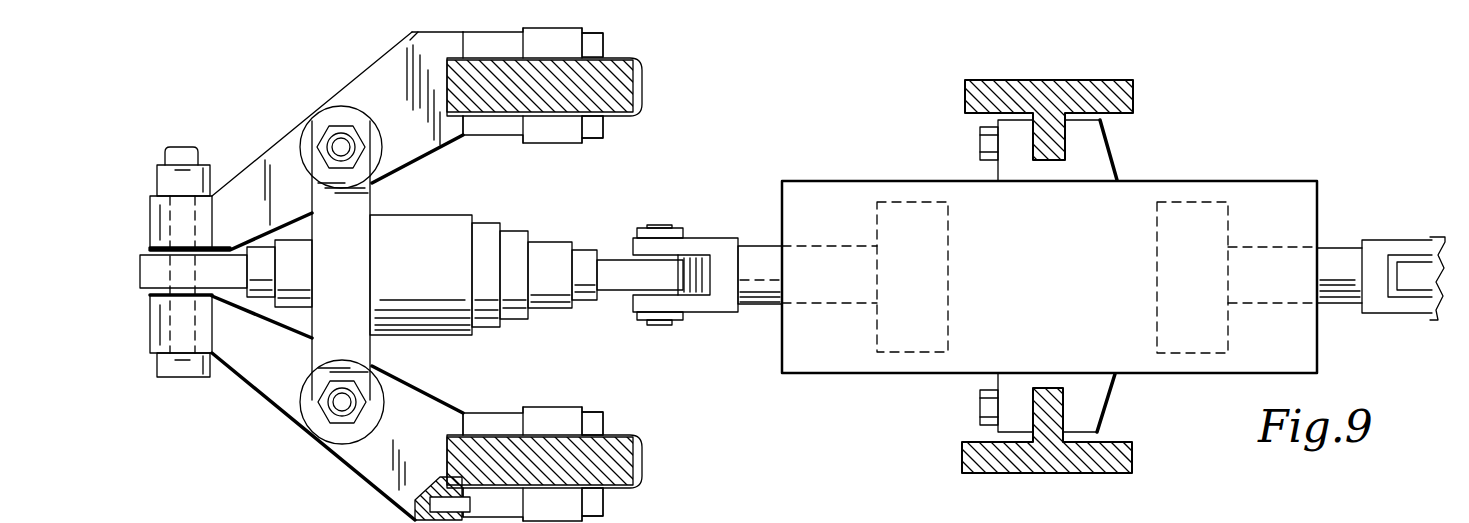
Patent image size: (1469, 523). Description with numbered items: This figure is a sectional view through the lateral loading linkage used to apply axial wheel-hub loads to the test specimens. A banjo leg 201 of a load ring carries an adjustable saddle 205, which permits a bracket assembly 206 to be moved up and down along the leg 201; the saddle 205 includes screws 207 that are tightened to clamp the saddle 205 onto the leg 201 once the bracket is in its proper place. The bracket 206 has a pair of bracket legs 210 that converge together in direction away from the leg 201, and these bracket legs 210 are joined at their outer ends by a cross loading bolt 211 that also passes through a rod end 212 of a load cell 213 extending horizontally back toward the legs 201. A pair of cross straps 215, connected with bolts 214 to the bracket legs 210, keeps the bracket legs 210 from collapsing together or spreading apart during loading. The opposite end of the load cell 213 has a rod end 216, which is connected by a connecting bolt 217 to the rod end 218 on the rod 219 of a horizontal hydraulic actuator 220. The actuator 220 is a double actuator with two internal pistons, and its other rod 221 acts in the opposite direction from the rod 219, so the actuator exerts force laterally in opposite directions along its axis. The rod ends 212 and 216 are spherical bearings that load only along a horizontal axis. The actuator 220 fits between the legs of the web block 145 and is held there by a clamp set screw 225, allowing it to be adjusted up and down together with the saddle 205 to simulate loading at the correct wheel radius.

The web block 145 is at (1043, 82).
The banjo legs 201 is at (633, 68).
The adjustable saddle 205 is at (568, 143).
The bracket assembly 206 is at (268, 400).
The screws 207 is at (603, 36).
The bracket legs 210 is at (283, 147).
The cross loading bolt 211 is at (182, 374).
The rod end 212 is at (218, 267).
The load cell 213 is at (445, 218).
The bolts 214 is at (341, 147).
The cross straps 215 is at (368, 353).
The rod end 216 is at (613, 260).
The connecting bolt 217 is at (663, 323).
The rod end 218 is at (708, 240).
The rod 219 is at (763, 304).
The horizontal hydraulic actuator 220 is at (885, 357).
The rod 221 is at (1332, 252).
The clamp set screw 225 is at (980, 145).